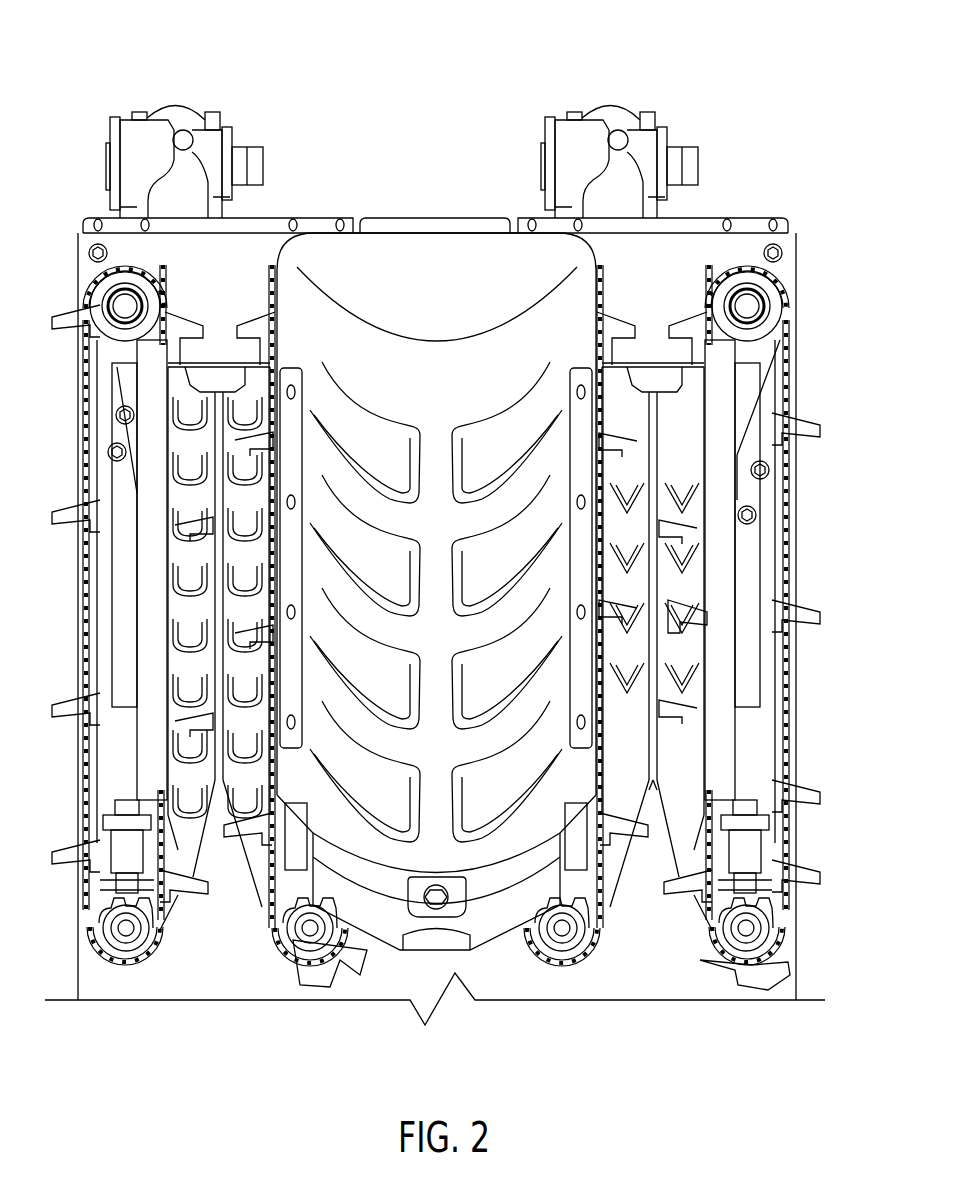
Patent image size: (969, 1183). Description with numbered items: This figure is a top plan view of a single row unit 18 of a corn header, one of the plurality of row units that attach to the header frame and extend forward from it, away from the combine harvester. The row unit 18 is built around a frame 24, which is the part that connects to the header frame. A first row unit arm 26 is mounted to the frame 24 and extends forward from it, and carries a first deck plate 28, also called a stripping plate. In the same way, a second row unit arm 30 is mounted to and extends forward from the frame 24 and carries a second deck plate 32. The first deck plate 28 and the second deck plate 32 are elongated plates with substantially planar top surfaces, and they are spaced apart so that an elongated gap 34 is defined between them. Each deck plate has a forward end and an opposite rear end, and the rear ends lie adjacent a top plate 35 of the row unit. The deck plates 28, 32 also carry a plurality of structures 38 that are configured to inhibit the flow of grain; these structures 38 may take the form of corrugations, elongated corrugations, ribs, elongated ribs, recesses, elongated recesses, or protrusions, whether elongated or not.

The row unit 18 is at (133, 83).
The frame 24 is at (668, 210).
The first row unit arm 26 is at (583, 980).
The first deck plate 28 is at (193, 877).
The second row unit arm 30 is at (768, 978).
The second deck plate 32 is at (267, 907).
The elongated gap 34 is at (653, 828).
The top plate 35 is at (228, 258).
The structures 38 is at (700, 595).